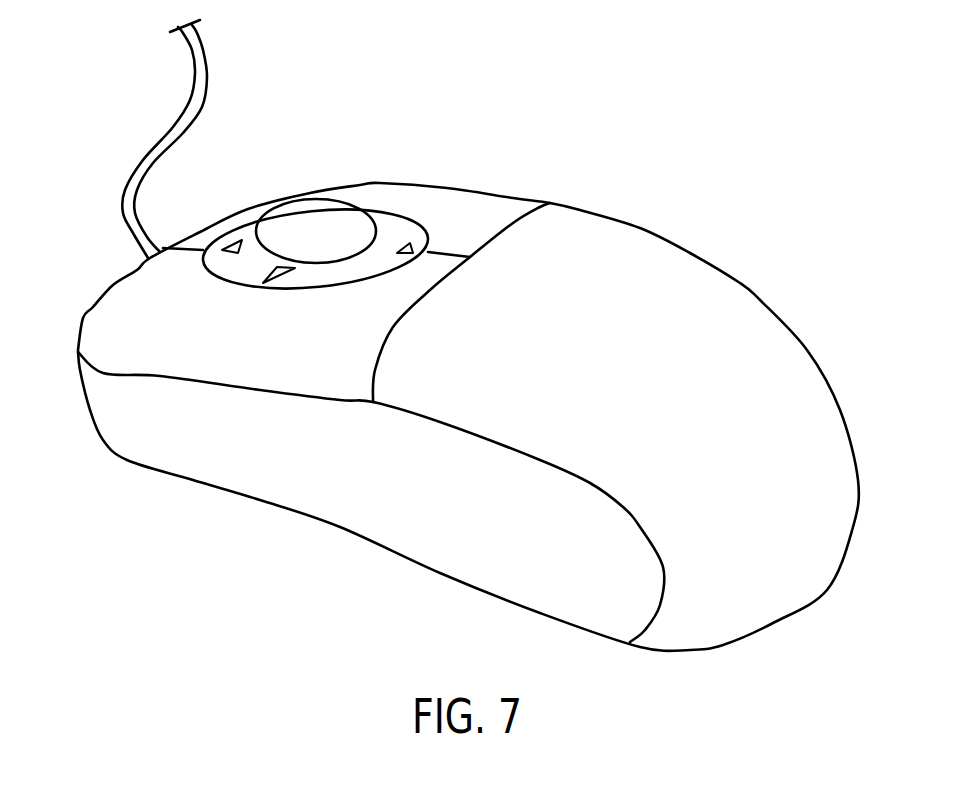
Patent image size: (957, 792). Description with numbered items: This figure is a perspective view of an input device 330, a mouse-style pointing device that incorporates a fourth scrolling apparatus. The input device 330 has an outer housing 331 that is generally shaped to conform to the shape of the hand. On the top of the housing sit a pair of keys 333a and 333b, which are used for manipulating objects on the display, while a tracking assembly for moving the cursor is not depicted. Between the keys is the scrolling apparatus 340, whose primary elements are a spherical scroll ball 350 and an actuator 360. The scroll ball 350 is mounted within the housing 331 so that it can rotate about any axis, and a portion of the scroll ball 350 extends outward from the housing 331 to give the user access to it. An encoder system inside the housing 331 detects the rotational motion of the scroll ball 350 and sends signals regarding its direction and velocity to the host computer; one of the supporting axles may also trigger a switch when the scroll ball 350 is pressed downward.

The input device 330 is at (630, 157).
The outer housing 331 is at (678, 268).
The key 333a is at (128, 298).
The key 333b is at (450, 200).
The scrolling apparatus 340 is at (238, 220).
The scroll ball 350 is at (308, 215).
The actuator 360 is at (315, 290).